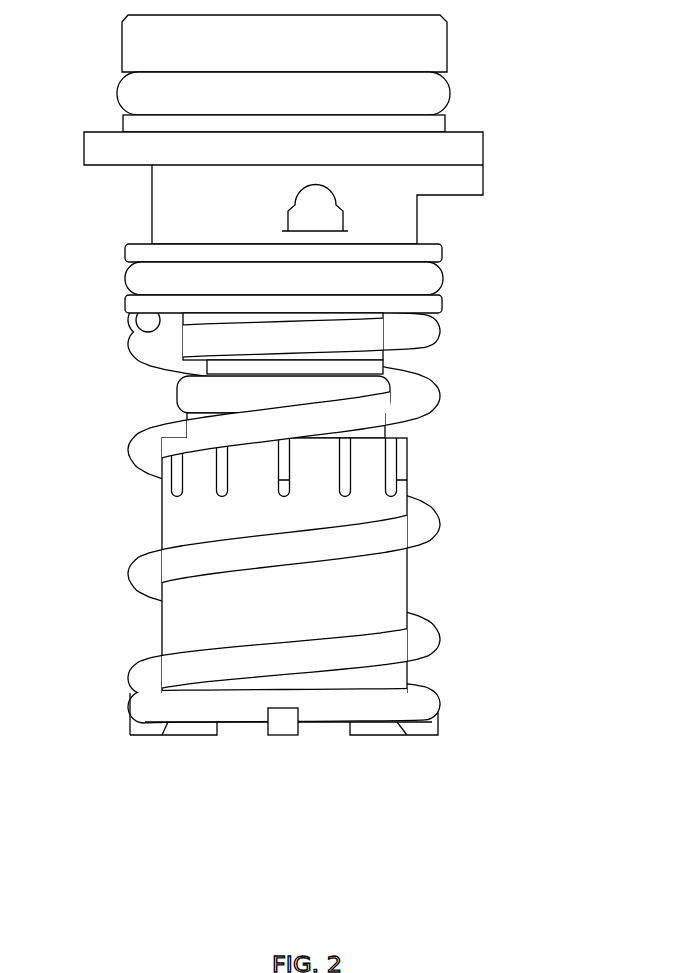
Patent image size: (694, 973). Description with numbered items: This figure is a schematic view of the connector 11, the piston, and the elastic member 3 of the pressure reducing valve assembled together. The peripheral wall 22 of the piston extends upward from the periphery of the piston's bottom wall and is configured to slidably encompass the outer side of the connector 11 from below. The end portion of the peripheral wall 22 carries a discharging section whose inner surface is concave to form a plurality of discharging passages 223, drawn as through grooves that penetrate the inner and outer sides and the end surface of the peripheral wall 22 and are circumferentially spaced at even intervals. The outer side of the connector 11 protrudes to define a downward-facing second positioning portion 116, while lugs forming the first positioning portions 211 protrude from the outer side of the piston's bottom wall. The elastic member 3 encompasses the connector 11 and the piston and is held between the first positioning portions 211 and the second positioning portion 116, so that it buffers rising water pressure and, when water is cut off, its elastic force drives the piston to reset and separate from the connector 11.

The connector 11 is at (438, 163).
The second positioning portion 116 is at (443, 255).
The elastic member 3 is at (410, 384).
The discharging passages 223 is at (412, 487).
The peripheral wall 22 is at (205, 625).
The first positioning portions 211 is at (285, 722).